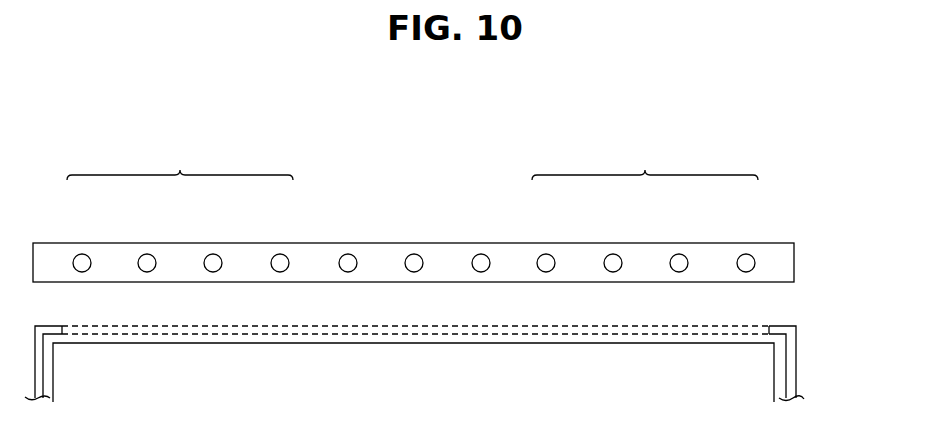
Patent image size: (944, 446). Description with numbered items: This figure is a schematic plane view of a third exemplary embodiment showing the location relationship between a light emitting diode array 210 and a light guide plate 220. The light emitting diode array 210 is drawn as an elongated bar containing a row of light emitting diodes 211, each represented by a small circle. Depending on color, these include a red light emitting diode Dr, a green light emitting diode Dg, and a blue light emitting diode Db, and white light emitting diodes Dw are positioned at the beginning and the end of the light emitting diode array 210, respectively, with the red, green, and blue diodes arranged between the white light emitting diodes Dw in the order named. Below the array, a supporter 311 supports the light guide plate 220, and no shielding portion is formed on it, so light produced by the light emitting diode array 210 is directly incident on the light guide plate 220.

The light emitting diode array 210 is at (424, 183).
The light emitting diodes 211 is at (412, 164).
The white light emitting diode Dw is at (81, 254).
The red light emitting diode Dr is at (146, 254).
The green light emitting diode Dg is at (212, 254).
The blue light emitting diode Db is at (279, 254).
The light guide plate 220 is at (258, 343).
The supporter 311 is at (791, 343).